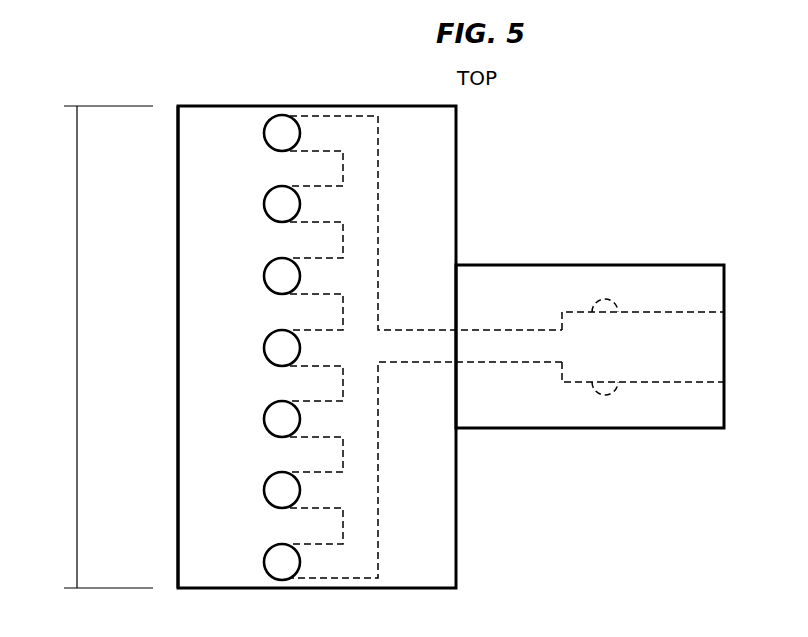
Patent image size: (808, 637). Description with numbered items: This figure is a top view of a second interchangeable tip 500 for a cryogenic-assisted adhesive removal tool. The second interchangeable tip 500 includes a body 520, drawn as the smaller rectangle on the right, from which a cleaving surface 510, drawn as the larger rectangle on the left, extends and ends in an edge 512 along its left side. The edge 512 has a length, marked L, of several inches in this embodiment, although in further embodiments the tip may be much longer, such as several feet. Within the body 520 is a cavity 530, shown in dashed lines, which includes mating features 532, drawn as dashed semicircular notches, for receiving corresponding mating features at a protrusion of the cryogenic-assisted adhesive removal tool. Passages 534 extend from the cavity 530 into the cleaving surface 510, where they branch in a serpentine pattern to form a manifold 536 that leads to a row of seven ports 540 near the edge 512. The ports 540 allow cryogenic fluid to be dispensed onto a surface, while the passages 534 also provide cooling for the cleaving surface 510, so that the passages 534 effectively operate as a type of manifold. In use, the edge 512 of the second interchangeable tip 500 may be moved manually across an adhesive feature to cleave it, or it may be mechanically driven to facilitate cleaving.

The second interchangeable tip 500 is at (139, 188).
The cleaving surface 510 is at (203, 341).
The edge 512 is at (178, 282).
The body 520 is at (597, 428).
The cavity 530 is at (707, 353).
The mating features 532 is at (615, 300).
The passages 534 is at (378, 278).
The manifold 536 is at (385, 217).
The ports 540 is at (264, 272).